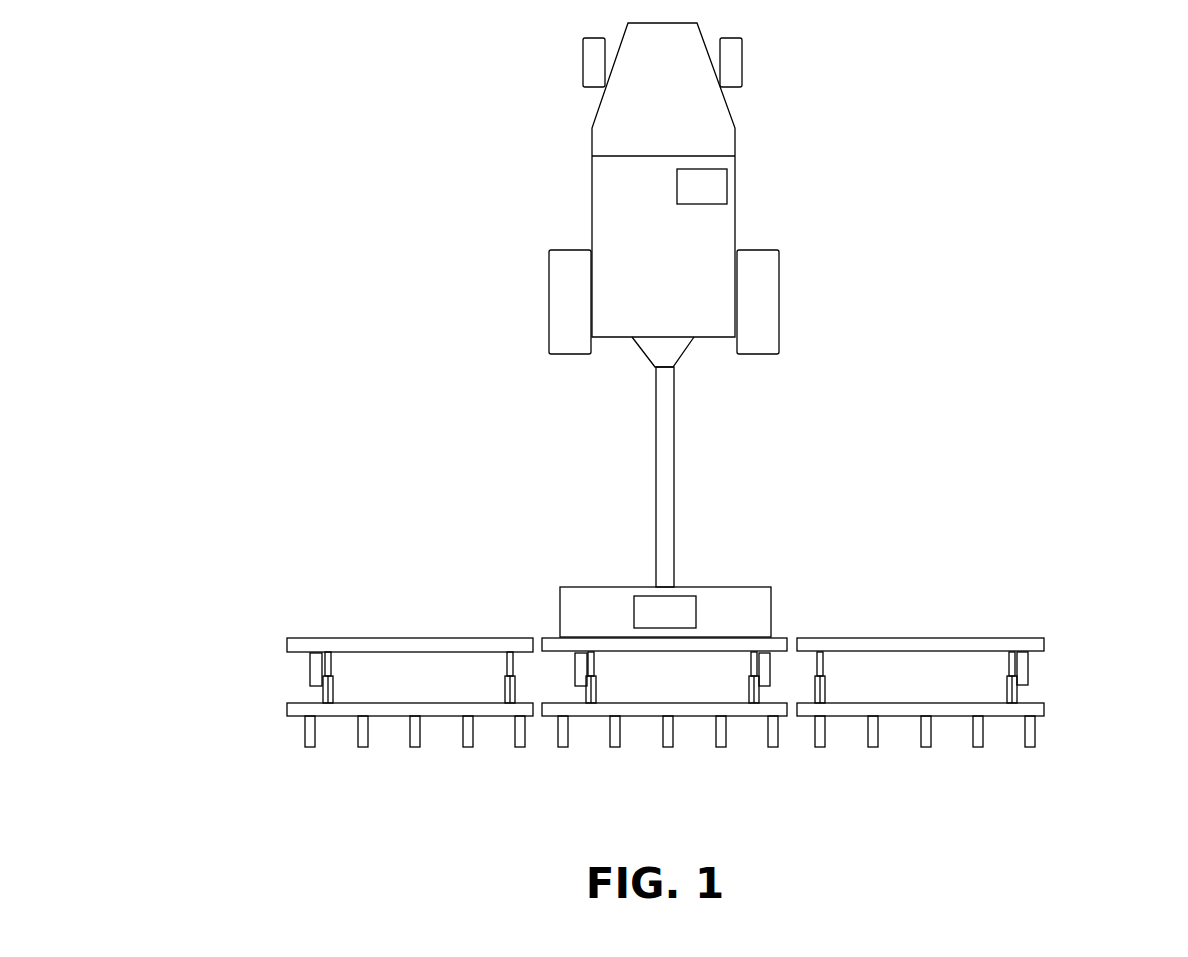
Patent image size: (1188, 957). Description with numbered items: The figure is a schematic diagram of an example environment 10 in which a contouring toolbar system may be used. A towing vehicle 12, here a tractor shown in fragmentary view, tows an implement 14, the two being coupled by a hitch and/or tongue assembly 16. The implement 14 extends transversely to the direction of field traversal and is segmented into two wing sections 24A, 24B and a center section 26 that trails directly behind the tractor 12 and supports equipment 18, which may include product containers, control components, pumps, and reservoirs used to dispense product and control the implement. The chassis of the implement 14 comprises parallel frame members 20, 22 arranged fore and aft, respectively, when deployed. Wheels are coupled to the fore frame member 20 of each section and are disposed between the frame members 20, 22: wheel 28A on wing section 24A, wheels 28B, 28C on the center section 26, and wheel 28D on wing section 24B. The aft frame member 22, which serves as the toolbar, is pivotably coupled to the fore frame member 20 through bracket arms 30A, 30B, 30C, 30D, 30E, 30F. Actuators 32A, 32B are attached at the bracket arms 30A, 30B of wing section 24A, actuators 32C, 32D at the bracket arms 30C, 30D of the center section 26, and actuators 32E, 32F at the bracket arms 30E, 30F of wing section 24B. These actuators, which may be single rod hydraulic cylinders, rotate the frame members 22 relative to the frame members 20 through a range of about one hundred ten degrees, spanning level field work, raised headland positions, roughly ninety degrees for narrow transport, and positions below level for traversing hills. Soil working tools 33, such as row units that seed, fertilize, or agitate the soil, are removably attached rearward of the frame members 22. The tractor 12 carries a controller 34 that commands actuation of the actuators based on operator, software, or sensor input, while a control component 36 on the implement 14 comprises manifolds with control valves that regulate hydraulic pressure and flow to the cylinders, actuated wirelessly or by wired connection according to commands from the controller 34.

The environment 10 is at (955, 130).
The towing vehicle 12 is at (666, 195).
The implement 14 is at (652, 686).
The hitch and/or tongue assembly 16 is at (674, 550).
The equipment 18 is at (704, 612).
The frame member 20 is at (248, 644).
The frame member 22 is at (248, 707).
The wing section 24A is at (355, 649).
The wing section 24B is at (954, 650).
The center section 26 is at (674, 732).
The wheel 28A is at (310, 672).
The wheel 28B is at (575, 660).
The wheel 28C is at (816, 674).
The wheel 28D is at (1028, 672).
The bracket arm 30A is at (334, 687).
The bracket arm 30B is at (505, 689).
The bracket arm 30C is at (596, 690).
The bracket arm 30D is at (749, 690).
The bracket arm 30E is at (825, 688).
The bracket arm 30F is at (1007, 688).
The actuator 32A is at (332, 665).
The actuator 32B is at (506, 665).
The actuator 32C is at (595, 663).
The actuator 32D is at (751, 663).
The actuator 32E is at (824, 668).
The actuator 32F is at (1008, 664).
The soil working tools 33 is at (1037, 737).
The controller 34 is at (702, 186).
The control component 36 is at (665, 612).